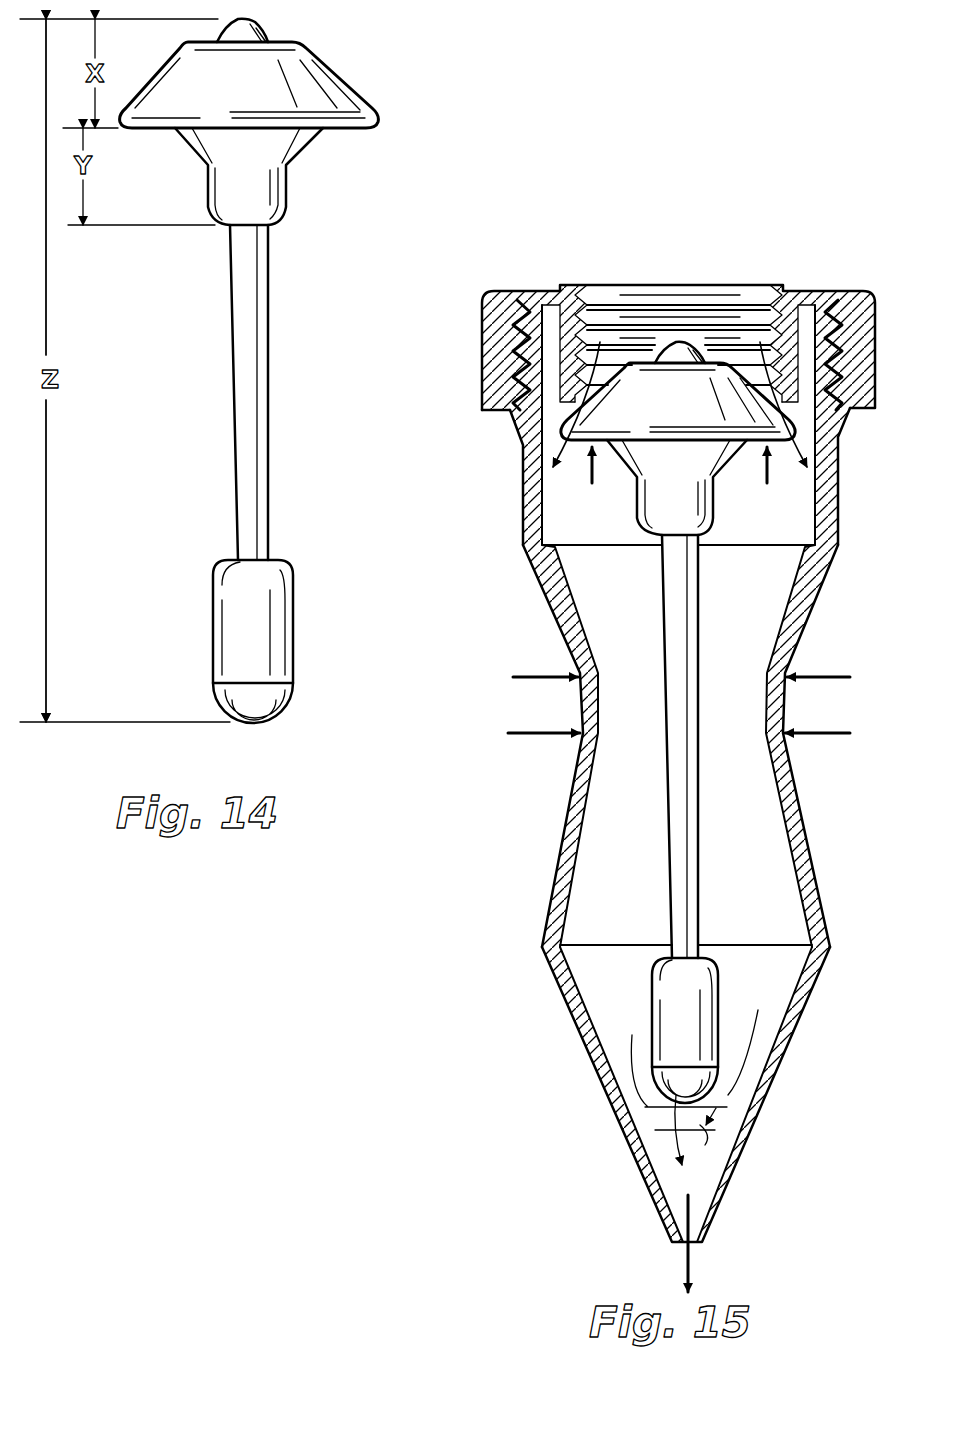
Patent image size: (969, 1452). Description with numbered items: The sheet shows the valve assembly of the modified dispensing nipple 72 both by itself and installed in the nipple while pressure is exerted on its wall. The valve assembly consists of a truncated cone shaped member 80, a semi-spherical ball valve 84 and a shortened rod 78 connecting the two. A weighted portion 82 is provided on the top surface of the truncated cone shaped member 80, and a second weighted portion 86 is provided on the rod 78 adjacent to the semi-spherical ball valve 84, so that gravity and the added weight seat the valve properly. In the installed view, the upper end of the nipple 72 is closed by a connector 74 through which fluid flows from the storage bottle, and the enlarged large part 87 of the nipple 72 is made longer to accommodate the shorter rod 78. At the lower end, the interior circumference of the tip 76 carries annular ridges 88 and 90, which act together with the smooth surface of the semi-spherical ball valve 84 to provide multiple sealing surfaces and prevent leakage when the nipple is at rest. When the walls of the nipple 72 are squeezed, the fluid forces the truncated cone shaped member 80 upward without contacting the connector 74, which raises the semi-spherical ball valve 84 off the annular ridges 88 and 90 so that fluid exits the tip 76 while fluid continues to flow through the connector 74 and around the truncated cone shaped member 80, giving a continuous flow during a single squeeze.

In FIG. 15, the modified dispensing nipple 72 is at (540, 868).
In FIG. 15, the connector 74 is at (512, 290).
In FIG. 15, the tip 76 is at (647, 1185).
In FIG. 14, the rod 78 is at (247, 362).
In FIG. 15, the rod 78 is at (672, 820).
In FIG. 14, the truncated cone shaped member 80 is at (345, 103).
In FIG. 15, the truncated cone shaped member 80 is at (607, 428).
In FIG. 14, the weighted portion 82 is at (255, 30).
In FIG. 15, the weighted portion 82 is at (693, 342).
In FIG. 14, the semi-spherical ball valve 84 is at (270, 720).
In FIG. 15, the semi-spherical ball valve 84 is at (678, 1092).
In FIG. 14, the second weighted portion 86 is at (235, 610).
In FIG. 15, the second weighted portion 86 is at (675, 1012).
In FIG. 15, the large part 87 is at (527, 513).
In FIG. 15, the annular ridge 88 is at (715, 1090).
In FIG. 15, the annular ridge 90 is at (703, 1138).